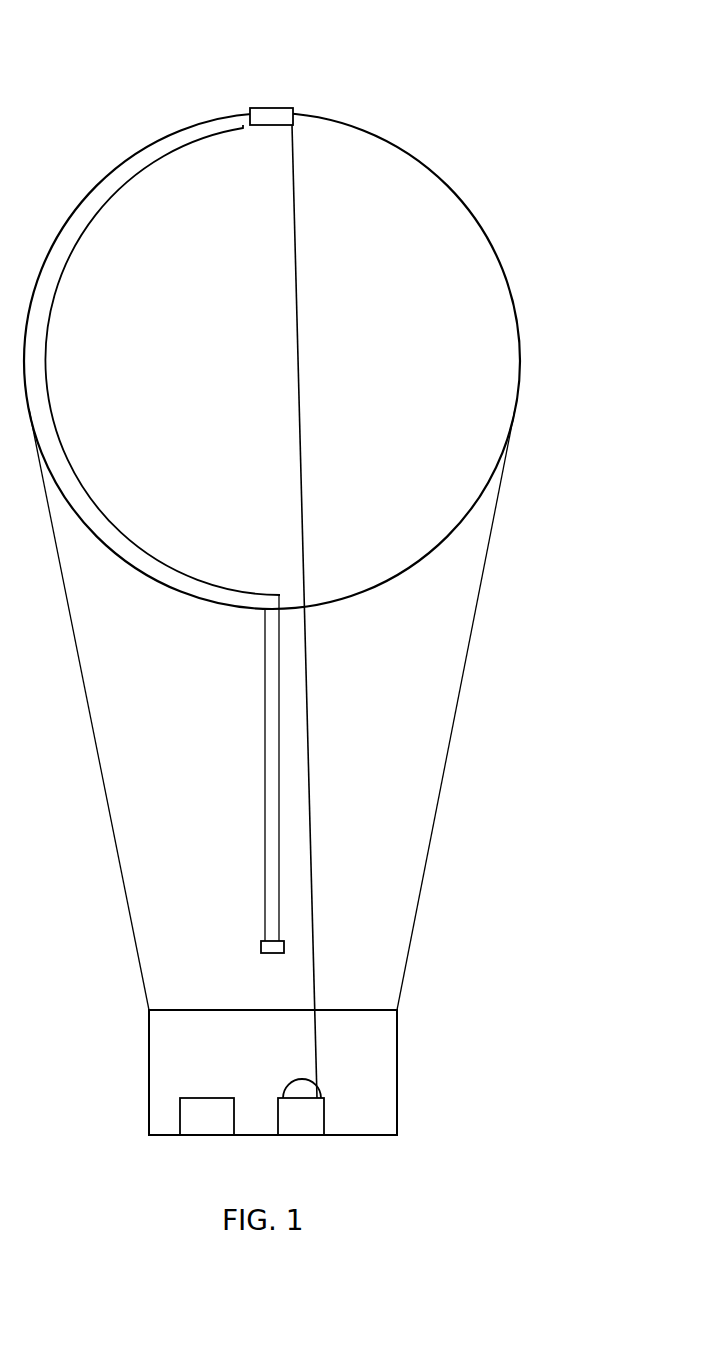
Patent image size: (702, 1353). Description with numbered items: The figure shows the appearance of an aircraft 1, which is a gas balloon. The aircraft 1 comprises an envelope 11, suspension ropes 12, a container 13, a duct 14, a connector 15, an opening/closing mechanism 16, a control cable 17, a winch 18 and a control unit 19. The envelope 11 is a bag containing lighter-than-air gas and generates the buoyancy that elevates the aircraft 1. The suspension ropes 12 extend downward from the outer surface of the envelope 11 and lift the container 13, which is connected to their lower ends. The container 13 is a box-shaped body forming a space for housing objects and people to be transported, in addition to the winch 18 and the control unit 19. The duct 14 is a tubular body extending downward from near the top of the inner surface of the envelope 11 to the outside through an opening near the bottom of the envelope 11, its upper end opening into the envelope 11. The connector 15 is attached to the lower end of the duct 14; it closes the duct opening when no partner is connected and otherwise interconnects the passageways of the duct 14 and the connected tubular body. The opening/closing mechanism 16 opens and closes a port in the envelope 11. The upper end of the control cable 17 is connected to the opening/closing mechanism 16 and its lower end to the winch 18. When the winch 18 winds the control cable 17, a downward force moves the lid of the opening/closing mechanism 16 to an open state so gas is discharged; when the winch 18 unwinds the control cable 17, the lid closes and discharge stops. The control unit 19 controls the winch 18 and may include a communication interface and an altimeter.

The aircraft 1 is at (312, 578).
The envelope 11 is at (505, 278).
The suspension ropes 12 is at (471, 636).
The container 13 is at (398, 1057).
The duct 14 is at (263, 747).
The connector 15 is at (260, 947).
The opening/closing mechanism 16 is at (268, 108).
The control cable 17 is at (308, 722).
The winch 18 is at (325, 1113).
The control unit 19 is at (215, 1098).